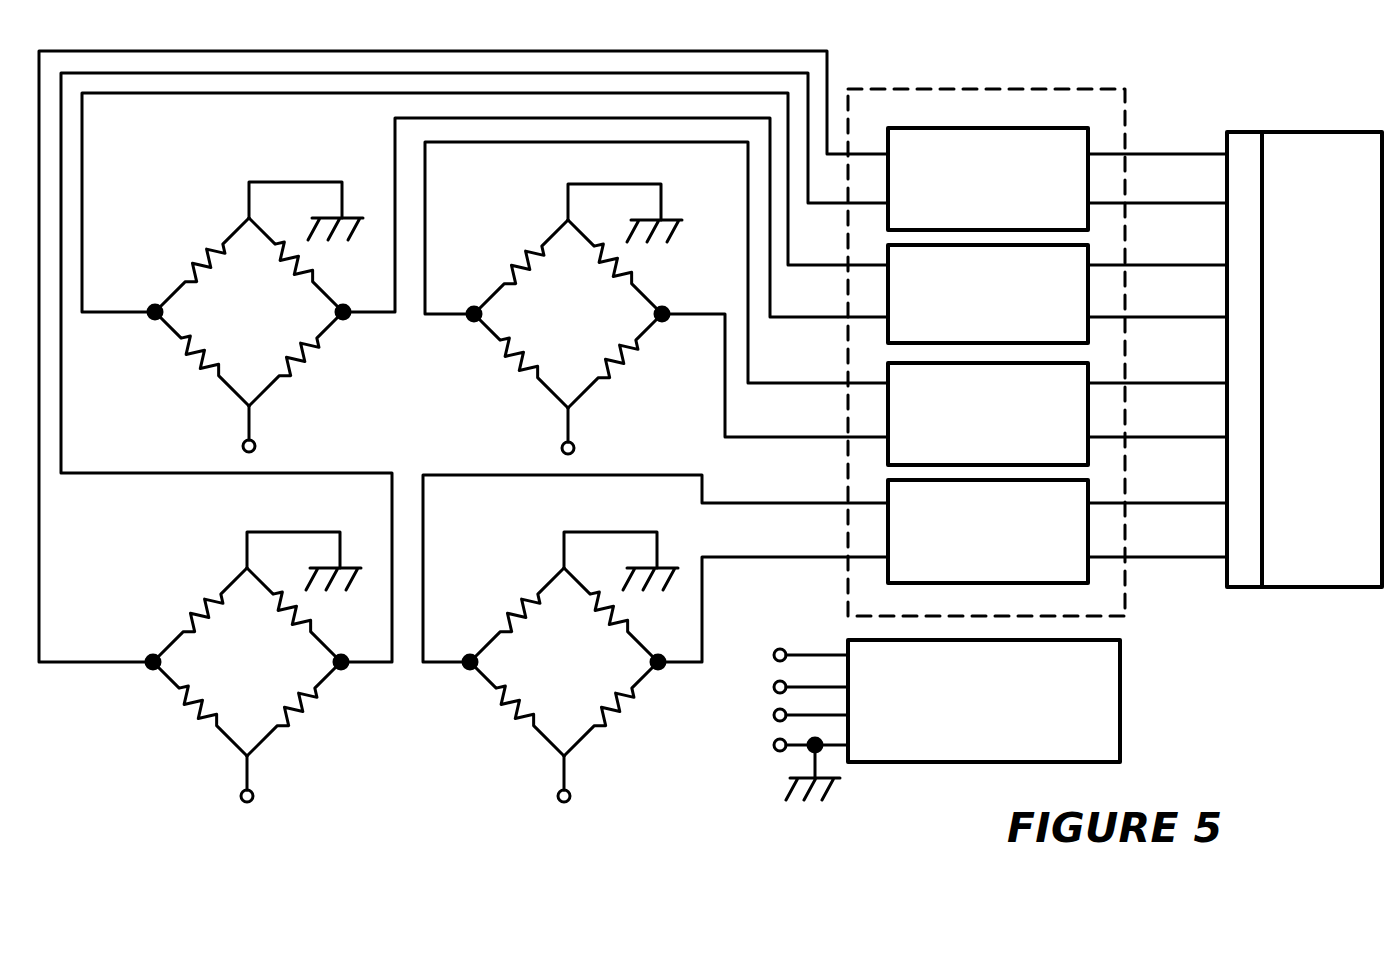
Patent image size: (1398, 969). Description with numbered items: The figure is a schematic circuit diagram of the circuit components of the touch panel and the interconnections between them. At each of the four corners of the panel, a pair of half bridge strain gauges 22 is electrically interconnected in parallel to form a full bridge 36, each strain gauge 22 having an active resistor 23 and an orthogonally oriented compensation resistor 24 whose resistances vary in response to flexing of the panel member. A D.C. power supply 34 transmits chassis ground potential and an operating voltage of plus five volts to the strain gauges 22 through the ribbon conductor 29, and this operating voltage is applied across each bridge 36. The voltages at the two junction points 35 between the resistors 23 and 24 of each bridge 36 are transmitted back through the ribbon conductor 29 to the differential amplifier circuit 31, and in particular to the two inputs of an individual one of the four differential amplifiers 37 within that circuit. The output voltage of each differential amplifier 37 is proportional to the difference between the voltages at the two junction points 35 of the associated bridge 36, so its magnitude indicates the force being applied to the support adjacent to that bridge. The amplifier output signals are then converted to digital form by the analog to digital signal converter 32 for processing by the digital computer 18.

The digital computer 18 is at (1286, 324).
The strain gauge 22 is at (406, 458).
The active resistor 23 is at (203, 263).
The compensation resistor 24 is at (202, 358).
The ribbon conductor 29 is at (808, 44).
The differential amplifier circuit 31 is at (1033, 89).
The analog to digital signal converter 32 is at (1250, 132).
The D.C. power supply 34 is at (1120, 665).
The junction point 35 is at (152, 308).
The full bridge 36 is at (249, 173).
The differential amplifier 37 is at (940, 159).